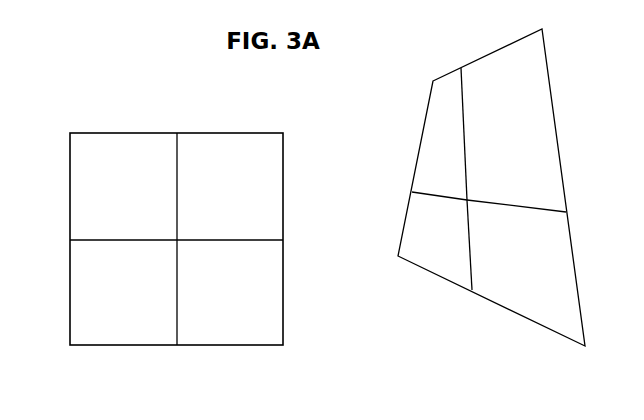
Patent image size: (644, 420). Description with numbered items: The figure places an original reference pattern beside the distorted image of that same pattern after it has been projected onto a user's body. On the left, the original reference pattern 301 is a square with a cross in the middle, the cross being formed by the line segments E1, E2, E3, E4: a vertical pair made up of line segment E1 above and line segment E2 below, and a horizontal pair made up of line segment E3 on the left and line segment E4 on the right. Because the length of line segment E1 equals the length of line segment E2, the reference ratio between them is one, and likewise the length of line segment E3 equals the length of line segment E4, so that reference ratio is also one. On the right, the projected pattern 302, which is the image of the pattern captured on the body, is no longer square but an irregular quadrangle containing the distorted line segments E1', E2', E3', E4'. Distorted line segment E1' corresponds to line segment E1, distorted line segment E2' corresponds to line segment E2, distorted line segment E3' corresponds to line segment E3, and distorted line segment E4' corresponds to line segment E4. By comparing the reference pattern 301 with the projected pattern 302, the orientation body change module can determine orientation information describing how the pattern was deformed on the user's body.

The original reference pattern 301 is at (176, 262).
The projected pattern 302 is at (491, 210).
The line segment E1 is at (188, 186).
The line segment E2 is at (188, 292).
The line segment E3 is at (123, 230).
The line segment E4 is at (230, 230).
The distorted line segment E1' is at (475, 134).
The distorted line segment E2' is at (480, 245).
The distorted line segment E3' is at (439, 188).
The distorted line segment E4' is at (516, 199).